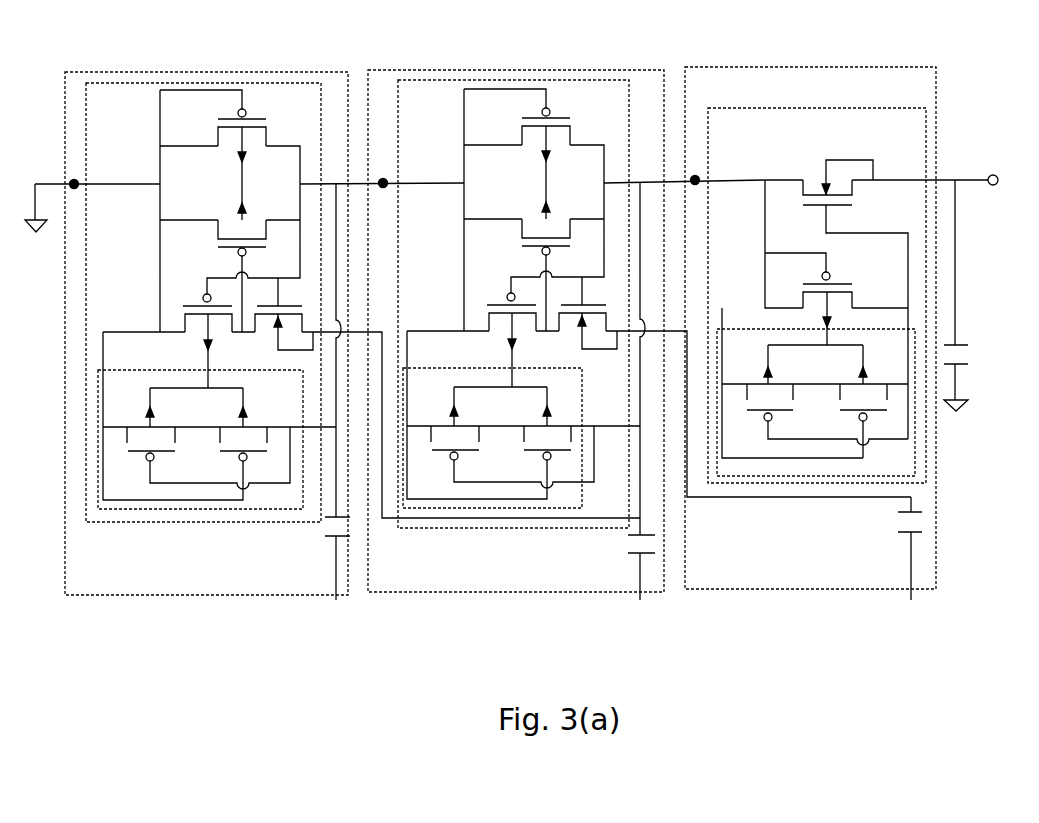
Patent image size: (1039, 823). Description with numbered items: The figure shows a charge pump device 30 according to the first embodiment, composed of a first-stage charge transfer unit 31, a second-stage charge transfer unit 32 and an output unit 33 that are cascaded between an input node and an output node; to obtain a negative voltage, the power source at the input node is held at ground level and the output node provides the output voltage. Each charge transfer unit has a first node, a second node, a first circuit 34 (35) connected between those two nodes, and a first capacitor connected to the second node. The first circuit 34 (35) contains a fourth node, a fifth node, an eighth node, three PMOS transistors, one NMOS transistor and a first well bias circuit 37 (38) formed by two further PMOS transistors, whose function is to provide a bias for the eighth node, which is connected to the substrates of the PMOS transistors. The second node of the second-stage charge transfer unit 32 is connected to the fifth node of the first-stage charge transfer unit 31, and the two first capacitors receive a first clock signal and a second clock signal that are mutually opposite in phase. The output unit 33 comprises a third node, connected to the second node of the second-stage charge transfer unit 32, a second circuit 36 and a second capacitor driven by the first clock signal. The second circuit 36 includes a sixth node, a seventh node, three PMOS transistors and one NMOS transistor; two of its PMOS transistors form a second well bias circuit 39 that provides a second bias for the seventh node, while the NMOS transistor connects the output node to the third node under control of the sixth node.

The charge pump device 30 is at (107, 642).
The first-stage charge transfer unit 31 is at (213, 72).
The second-stage charge transfer unit 32 is at (472, 70).
The output unit 33 is at (793, 67).
The first circuit 34 is at (140, 522).
The first circuit 35 is at (453, 528).
The second circuit 36 is at (777, 485).
The first well bias circuit 37 is at (183, 508).
The first well bias circuit 38 is at (495, 508).
The second well bias circuit 39 is at (823, 478).